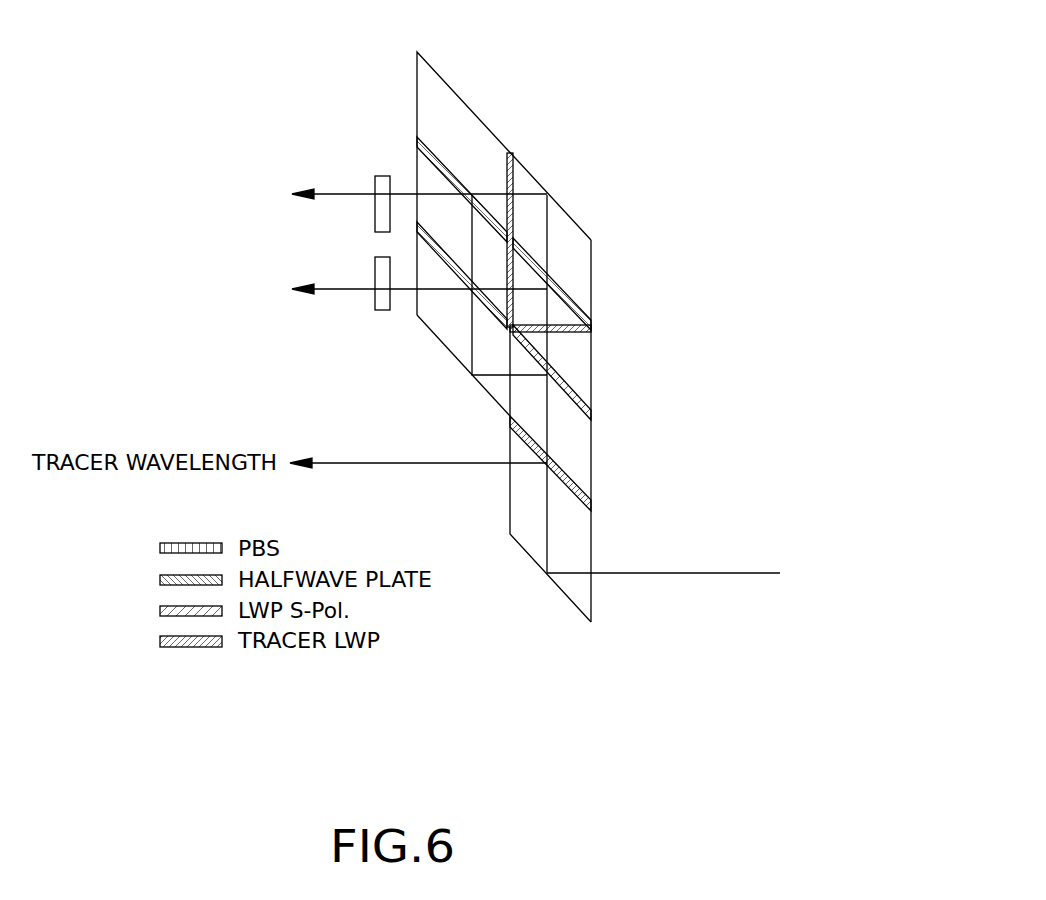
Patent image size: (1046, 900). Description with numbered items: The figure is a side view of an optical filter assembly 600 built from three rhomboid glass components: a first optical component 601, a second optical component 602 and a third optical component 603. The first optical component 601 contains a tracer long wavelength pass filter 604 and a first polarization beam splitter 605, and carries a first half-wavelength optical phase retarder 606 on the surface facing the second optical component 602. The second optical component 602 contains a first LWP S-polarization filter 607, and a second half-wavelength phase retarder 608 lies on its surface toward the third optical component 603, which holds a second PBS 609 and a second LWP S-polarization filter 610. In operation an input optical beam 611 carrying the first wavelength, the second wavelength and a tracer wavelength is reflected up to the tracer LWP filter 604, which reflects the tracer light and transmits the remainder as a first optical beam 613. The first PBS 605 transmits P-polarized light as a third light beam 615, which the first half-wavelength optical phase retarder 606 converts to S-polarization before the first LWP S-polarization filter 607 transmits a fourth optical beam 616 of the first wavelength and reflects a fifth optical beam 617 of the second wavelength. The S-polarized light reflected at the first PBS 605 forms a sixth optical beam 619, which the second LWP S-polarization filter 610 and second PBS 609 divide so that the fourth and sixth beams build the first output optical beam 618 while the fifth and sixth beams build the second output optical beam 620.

The optical filter assembly 600 is at (683, 81).
The first optical component 601 is at (600, 547).
The second optical component 602 is at (598, 302).
The third optical component 603 is at (408, 76).
The tracer long wavelength pass (LWP) filter 604 is at (590, 494).
The first polarization beam splitter (PBS) 605 is at (577, 392).
The first half-wavelength optical phase retarder 606 is at (593, 332).
The first long wavelength pass (LWP) S-polarization filter 607 is at (558, 292).
The second half-wavelength optical phase retarder 608 is at (511, 162).
The second polarization beam splitter (PBS) 609 is at (443, 162).
The second long wavelength pass (LWP) S-polarization filter 610 is at (486, 306).
The input optical beam 611 is at (697, 575).
The first optical beam 613 is at (548, 418).
The third light beam 615 is at (547, 343).
The fourth optical beam 616 is at (547, 217).
The fifth optical beam 617 is at (545, 258).
The first output optical beam 618 is at (397, 190).
The sixth optical beam 619 is at (487, 378).
The second output optical beam 620 is at (398, 292).